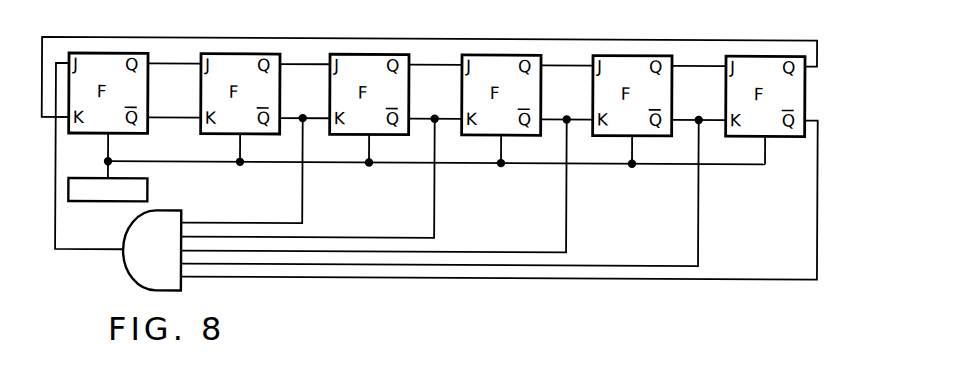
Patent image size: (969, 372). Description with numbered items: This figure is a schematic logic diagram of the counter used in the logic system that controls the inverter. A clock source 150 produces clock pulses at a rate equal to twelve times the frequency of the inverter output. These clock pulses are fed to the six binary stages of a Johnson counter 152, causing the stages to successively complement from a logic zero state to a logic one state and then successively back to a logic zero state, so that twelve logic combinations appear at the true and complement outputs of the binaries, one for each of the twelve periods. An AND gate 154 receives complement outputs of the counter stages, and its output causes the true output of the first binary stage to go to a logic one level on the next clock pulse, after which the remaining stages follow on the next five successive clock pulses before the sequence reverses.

The clock source 150 is at (149, 183).
The Johnson counter 152 is at (245, 30).
The AND gate 154 is at (131, 251).